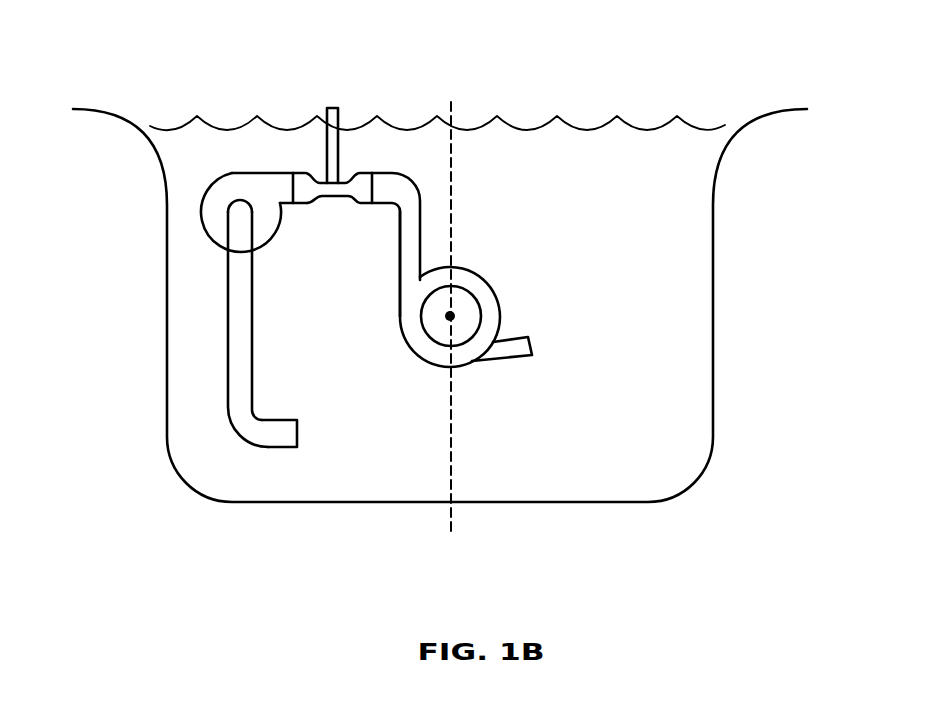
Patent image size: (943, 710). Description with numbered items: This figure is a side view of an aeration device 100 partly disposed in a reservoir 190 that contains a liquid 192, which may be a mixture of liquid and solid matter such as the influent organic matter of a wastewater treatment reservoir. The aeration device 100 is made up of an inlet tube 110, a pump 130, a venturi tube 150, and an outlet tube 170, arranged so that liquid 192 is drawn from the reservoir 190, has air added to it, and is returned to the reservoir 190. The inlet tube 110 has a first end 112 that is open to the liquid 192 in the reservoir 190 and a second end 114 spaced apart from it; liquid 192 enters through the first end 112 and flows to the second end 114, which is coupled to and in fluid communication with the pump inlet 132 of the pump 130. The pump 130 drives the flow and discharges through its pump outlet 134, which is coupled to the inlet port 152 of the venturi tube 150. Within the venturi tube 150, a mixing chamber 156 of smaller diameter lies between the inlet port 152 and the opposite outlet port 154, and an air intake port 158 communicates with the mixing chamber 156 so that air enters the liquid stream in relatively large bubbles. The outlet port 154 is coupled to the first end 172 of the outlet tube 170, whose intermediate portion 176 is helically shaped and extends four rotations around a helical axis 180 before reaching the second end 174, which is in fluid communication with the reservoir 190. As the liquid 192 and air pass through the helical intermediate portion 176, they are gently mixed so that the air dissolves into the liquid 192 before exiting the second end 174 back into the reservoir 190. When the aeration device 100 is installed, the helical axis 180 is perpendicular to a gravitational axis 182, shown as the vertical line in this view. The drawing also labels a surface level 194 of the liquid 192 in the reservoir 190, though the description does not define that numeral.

The aeration device 100 is at (498, 214).
The inlet tube 110 is at (235, 376).
The first end 112 is at (298, 432).
The second end 114 is at (230, 209).
The pump 130 is at (249, 176).
The pump inlet 132 is at (227, 202).
The pump outlet 134 is at (292, 192).
The venturi tube 150 is at (348, 227).
The inlet port 152 is at (310, 175).
The outlet port 154 is at (368, 186).
The mixing chamber 156 is at (316, 187).
The air intake port 158 is at (340, 108).
The outlet tube 170 is at (378, 299).
The first end 172 is at (388, 176).
The second end 174 is at (532, 342).
The intermediate portion 176 is at (497, 292).
The helical axis 180 is at (447, 318).
The gravitational axis 182 is at (453, 110).
The reservoir 190 is at (692, 262).
The liquid 192 is at (668, 333).
The fluid level 194 is at (597, 95).